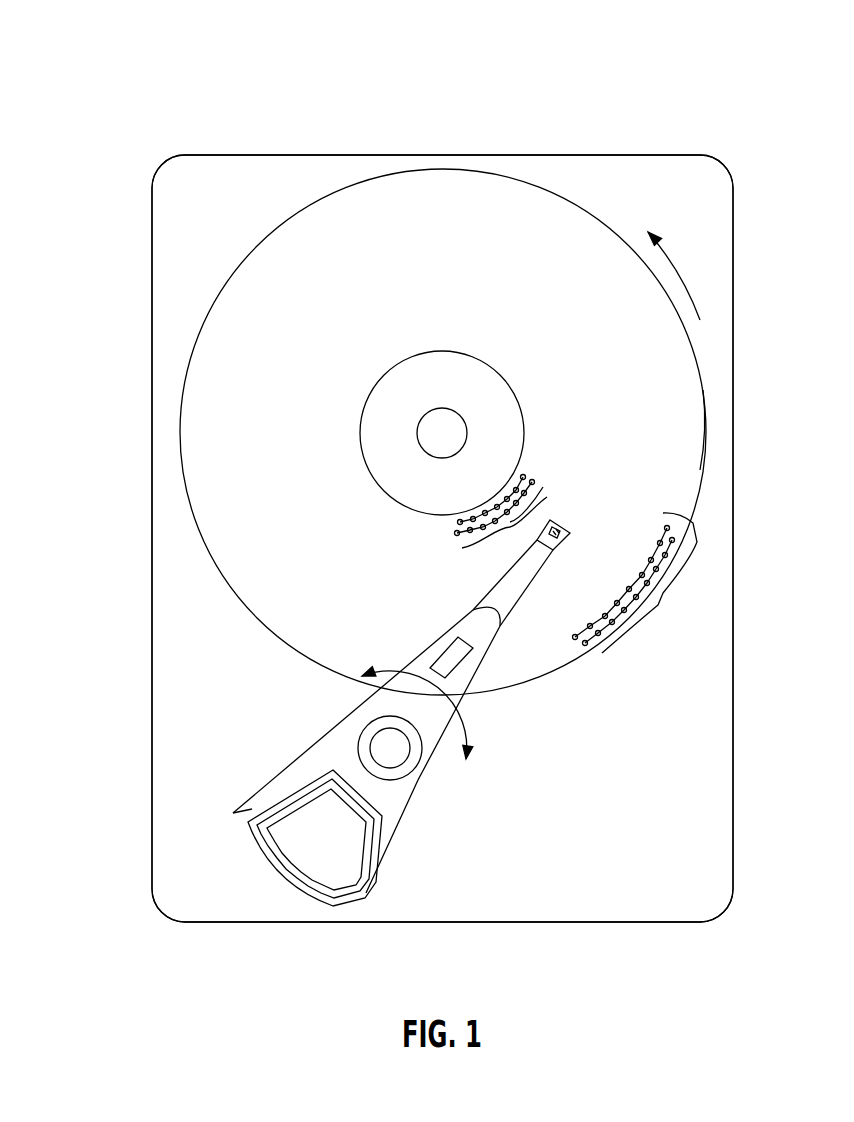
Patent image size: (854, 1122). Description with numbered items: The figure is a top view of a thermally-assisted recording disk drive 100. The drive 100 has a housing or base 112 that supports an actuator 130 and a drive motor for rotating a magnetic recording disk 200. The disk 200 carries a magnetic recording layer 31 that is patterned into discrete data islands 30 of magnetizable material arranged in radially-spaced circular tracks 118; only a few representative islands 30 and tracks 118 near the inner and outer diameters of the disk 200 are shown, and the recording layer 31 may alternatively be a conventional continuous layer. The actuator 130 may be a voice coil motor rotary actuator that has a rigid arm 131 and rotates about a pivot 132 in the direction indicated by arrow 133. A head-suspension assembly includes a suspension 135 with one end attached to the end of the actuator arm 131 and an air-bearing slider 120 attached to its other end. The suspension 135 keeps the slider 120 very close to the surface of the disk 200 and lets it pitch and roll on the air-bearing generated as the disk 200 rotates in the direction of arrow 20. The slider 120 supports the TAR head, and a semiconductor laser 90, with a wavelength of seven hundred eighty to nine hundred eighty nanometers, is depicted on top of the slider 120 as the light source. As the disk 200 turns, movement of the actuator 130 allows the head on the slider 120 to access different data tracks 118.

The thermally-assisted recording disk drive 100 is at (150, 70).
The housing or base 112 is at (661, 155).
The disk 200 is at (303, 210).
The arrow 20 is at (672, 260).
The magnetic recording layer 31 is at (685, 398).
The tracks 118 is at (447, 518).
The data islands 30 is at (538, 510).
The semiconductor laser 90 is at (565, 530).
The air-bearing slider 120 is at (560, 542).
The suspension 135 is at (487, 602).
The rigid arm 131 is at (430, 652).
The pivot 132 is at (380, 742).
The arrow 133 is at (470, 728).
The actuator 130 is at (235, 805).